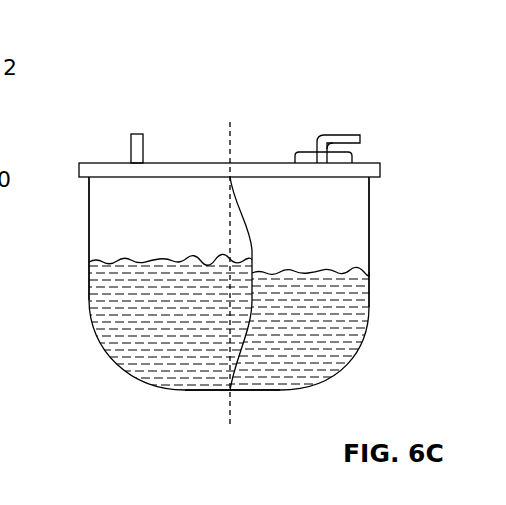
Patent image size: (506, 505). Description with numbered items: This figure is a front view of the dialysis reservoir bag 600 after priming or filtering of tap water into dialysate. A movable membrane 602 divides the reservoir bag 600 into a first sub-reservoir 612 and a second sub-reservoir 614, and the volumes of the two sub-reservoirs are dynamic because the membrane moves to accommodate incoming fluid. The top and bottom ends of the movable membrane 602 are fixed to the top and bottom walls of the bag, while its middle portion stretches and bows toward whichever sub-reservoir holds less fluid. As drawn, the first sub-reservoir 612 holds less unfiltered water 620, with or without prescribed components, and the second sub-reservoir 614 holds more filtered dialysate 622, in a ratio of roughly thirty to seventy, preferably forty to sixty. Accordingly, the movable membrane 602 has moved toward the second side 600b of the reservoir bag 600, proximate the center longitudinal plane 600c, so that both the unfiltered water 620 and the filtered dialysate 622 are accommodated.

The dialysis reservoir bag 600 is at (393, 87).
The second side of the reservoir bag 600b is at (372, 253).
The center longitudinal plane 600c is at (228, 405).
The movable membrane 602 is at (245, 357).
The first sub-reservoir 612 is at (360, 215).
The second sub-reservoir 614 is at (97, 217).
The unfiltered water 620 is at (347, 337).
The filtered dialysate 622 is at (110, 337).